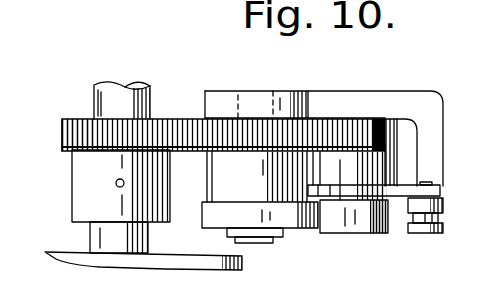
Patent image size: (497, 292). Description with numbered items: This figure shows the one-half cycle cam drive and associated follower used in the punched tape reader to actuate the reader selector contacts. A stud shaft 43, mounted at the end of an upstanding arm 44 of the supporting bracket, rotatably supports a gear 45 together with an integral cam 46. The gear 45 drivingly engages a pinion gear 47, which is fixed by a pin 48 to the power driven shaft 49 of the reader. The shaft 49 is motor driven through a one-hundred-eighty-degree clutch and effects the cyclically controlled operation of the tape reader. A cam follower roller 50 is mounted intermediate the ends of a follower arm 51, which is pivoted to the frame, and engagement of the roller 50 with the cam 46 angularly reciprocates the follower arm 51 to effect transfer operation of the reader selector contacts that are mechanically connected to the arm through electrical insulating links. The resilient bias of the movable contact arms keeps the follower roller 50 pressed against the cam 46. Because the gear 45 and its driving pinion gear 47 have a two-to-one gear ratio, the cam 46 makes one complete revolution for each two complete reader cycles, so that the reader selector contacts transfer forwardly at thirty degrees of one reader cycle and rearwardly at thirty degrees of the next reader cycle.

The stud shaft 43 is at (238, 99).
The upstanding arm 44 is at (291, 91).
The gear 45 is at (190, 118).
The cam 46 is at (301, 228).
The pinion gear 47 is at (70, 118).
The pin 48 is at (115, 183).
The power driven shaft 49 is at (148, 96).
The cam follower roller 50 is at (378, 233).
The follower arm 51 is at (400, 185).